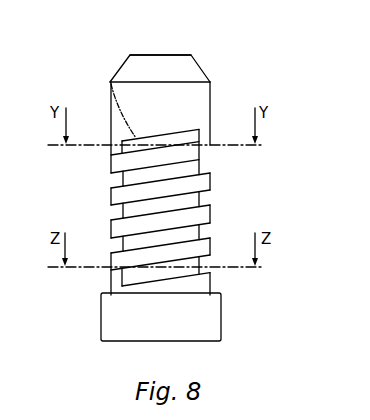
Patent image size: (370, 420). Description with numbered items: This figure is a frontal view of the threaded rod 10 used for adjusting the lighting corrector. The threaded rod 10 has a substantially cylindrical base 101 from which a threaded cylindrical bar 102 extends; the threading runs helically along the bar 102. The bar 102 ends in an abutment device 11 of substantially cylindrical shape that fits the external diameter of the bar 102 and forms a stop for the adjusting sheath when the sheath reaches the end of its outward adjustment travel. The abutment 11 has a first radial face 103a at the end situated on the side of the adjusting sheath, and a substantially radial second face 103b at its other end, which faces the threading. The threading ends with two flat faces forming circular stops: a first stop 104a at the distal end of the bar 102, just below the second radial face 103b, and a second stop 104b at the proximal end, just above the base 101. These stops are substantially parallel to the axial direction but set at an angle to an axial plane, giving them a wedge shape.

The threaded rod 10 is at (86, 50).
The abutment device 11 is at (198, 64).
The first radial face 103a is at (163, 56).
The second radial face 103b is at (110, 82).
The threaded cylindrical bar 102 is at (122, 176).
The first stop 104a is at (212, 141).
The second stop 104b is at (120, 275).
The base 101 is at (118, 320).